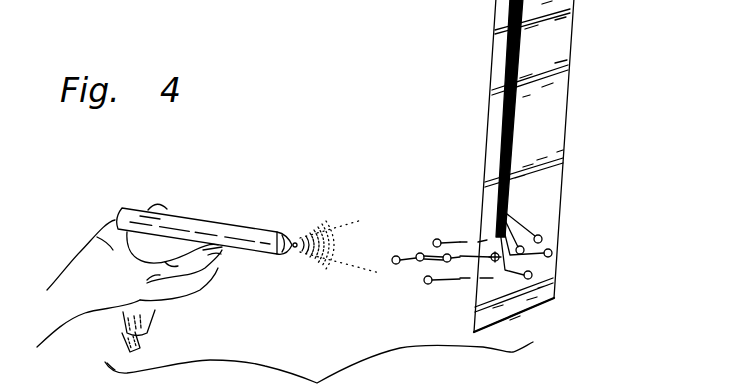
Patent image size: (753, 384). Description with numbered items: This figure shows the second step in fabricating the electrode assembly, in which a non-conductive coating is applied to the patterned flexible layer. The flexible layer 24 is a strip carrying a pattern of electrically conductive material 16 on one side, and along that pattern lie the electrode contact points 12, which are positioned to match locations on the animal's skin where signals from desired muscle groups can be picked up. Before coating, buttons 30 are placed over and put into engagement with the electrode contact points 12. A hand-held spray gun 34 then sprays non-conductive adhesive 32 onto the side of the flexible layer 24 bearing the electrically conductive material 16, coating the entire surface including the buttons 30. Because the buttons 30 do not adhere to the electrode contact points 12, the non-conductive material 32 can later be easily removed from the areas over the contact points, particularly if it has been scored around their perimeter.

The electrode contact points 12 is at (532, 274).
The electrically conductive material 16 is at (503, 121).
The flexible layer 24 is at (492, 21).
The buttons 30 is at (429, 285).
The non-conductive adhesive 32 is at (372, 213).
The spray gun 34 is at (197, 217).